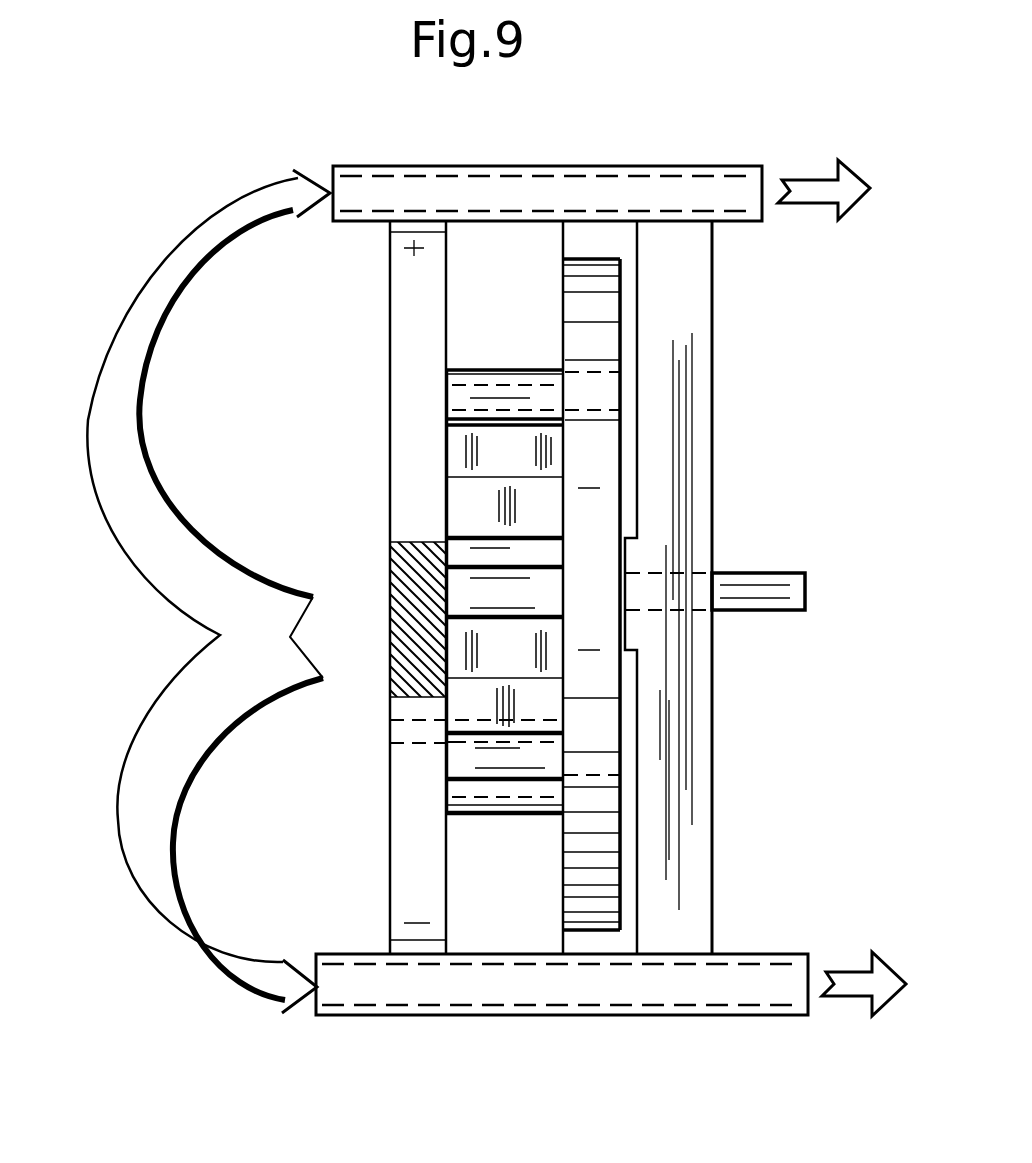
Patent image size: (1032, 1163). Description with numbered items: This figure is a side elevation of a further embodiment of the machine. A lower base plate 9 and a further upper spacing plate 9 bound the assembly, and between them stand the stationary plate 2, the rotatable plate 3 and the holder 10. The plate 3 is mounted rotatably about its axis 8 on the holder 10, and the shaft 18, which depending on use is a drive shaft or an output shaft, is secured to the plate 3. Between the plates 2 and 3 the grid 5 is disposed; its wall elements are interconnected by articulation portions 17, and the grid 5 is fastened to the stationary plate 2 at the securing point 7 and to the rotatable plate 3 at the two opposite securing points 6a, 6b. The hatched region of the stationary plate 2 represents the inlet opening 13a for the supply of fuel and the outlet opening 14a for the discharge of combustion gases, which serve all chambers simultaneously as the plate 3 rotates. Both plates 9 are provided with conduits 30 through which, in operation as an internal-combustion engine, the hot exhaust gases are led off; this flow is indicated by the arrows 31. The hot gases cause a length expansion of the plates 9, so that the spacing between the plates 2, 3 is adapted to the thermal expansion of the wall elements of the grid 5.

The stationary plate 2 is at (410, 252).
The rotatable plate 3 is at (599, 272).
The grid 5 is at (500, 257).
The securing point 6a is at (621, 401).
The securing point 6b is at (573, 790).
The securing point 7 is at (442, 742).
The axis 8 is at (774, 581).
The shaft 18 is at (790, 588).
The base plate 9 is at (562, 592).
The holder 10 is at (686, 727).
The inlet opening 13a is at (246, 619).
The outlet opening 14a is at (420, 610).
The articulation portion 17 is at (530, 376).
The conduit 30 is at (705, 176).
The arrow 31 is at (120, 412).